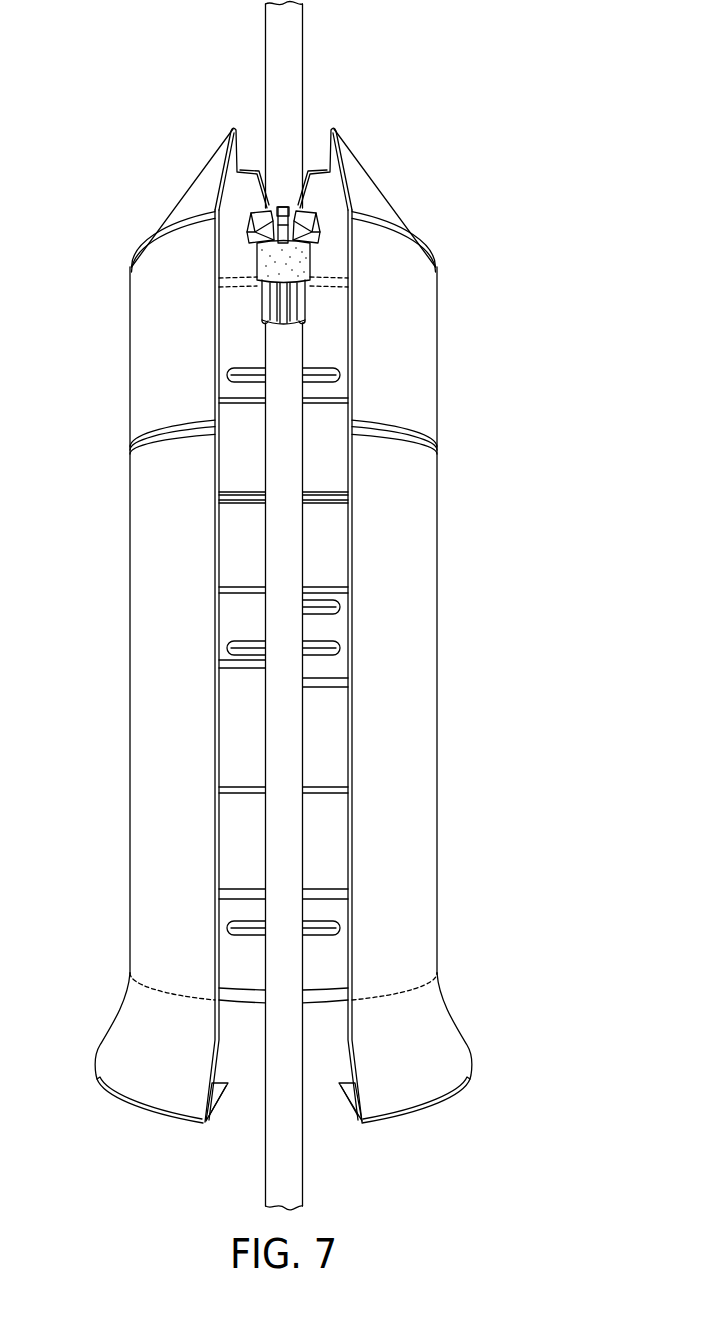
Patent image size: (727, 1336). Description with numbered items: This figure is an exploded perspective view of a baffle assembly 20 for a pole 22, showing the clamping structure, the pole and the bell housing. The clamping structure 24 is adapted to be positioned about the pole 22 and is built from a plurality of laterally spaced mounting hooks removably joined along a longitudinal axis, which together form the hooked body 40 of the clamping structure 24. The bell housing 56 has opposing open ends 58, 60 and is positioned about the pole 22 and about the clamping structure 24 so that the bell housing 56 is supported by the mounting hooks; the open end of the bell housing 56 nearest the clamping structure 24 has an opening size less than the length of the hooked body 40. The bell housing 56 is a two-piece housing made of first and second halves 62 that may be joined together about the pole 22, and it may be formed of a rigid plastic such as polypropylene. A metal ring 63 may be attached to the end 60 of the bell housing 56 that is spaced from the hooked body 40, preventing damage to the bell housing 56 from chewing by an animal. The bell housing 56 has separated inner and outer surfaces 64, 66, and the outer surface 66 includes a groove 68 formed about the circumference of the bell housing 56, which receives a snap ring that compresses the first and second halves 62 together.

The baffle assembly 20 is at (410, 116).
The pole 22 is at (283, 40).
The clamping structure 24 is at (324, 257).
The hooked body 40 is at (266, 220).
The bell housing 56 is at (476, 628).
The open end 58 is at (310, 137).
The open end 60 is at (317, 1088).
The first and second halves 62 is at (437, 525).
The metal ring 63 is at (219, 1104).
The inner surface 64 is at (227, 963).
The outer surface 66 is at (130, 790).
The groove 68 is at (136, 446).